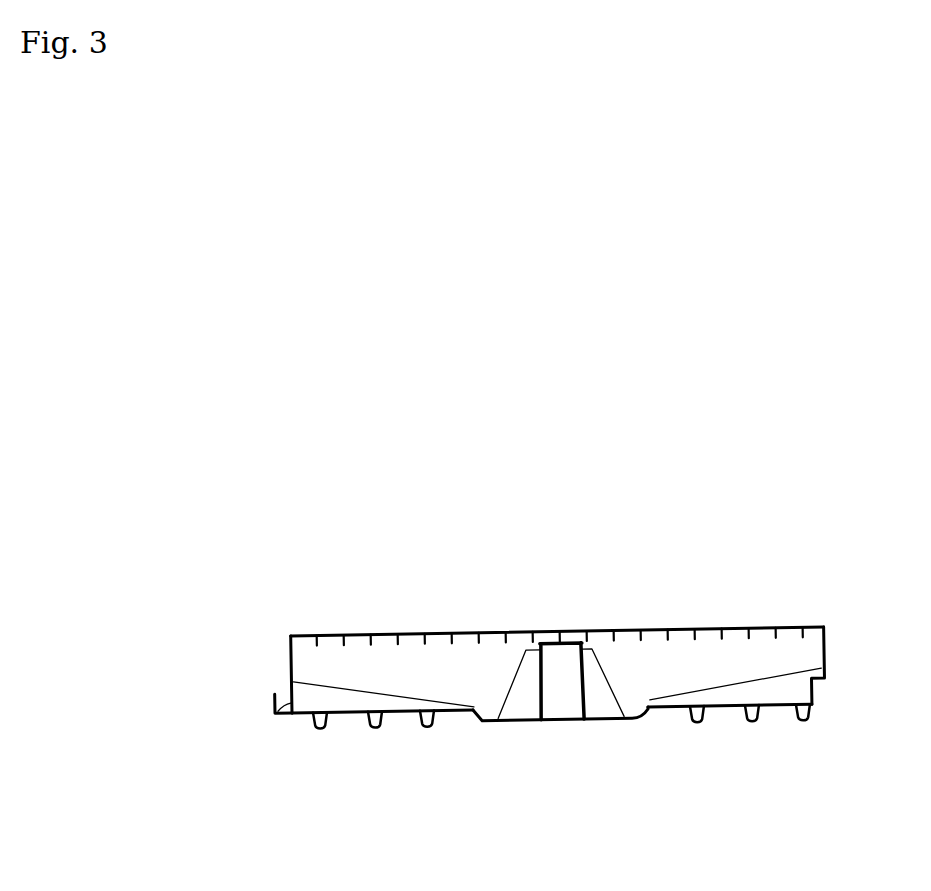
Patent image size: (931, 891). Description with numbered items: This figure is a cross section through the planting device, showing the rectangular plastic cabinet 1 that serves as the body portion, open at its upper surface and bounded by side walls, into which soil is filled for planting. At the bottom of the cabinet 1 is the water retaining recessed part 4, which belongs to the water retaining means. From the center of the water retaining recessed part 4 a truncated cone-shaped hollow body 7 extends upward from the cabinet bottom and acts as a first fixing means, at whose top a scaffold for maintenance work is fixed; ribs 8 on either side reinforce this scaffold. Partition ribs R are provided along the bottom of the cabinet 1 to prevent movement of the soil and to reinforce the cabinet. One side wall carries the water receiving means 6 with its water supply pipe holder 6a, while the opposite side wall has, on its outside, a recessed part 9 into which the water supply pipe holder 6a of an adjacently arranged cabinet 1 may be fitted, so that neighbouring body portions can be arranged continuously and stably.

The cabinet 1 is at (782, 570).
The water retaining recessed part 4 is at (491, 710).
The water receiving means 6 is at (244, 678).
The water supply pipe holder 6a is at (277, 716).
The truncated cone-shaped hollow body 7 is at (560, 707).
The ribs 8 is at (517, 715).
The recessed part 9 is at (817, 698).
The partition ribs R is at (780, 688).